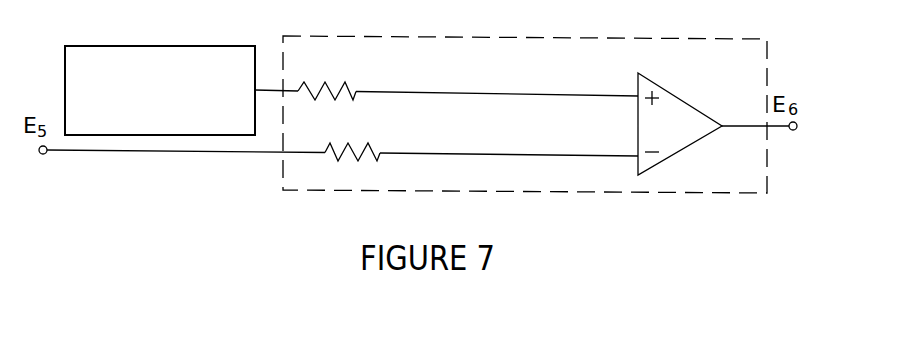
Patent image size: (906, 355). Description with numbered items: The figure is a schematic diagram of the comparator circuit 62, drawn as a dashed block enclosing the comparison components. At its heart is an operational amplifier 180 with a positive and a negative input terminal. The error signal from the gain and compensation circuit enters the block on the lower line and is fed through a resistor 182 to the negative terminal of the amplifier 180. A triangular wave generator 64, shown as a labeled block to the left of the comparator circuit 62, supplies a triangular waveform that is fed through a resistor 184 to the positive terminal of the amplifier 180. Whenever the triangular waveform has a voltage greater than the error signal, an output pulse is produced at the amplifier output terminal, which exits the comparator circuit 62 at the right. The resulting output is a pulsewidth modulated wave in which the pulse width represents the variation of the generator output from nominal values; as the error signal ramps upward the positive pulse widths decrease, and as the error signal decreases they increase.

The triangular wave generator 64 is at (202, 46).
The comparator circuit 62 is at (510, 37).
The resistor 184 is at (332, 87).
The resistor 182 is at (357, 145).
The operational amplifier 180 is at (677, 97).